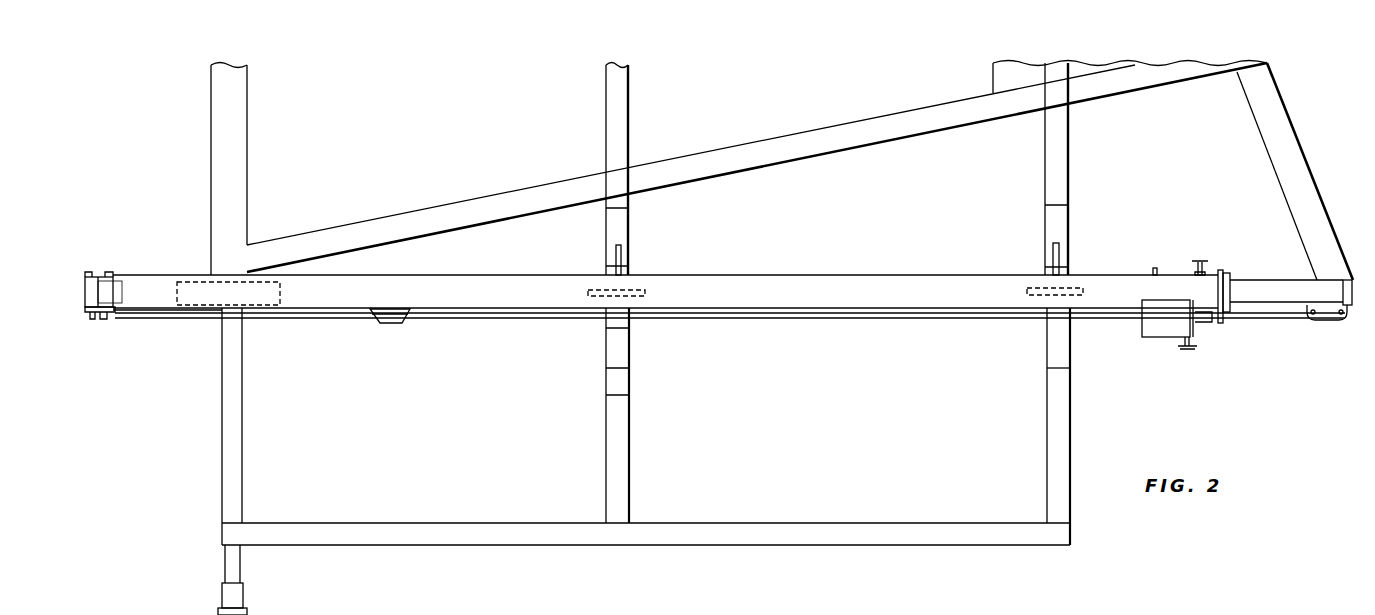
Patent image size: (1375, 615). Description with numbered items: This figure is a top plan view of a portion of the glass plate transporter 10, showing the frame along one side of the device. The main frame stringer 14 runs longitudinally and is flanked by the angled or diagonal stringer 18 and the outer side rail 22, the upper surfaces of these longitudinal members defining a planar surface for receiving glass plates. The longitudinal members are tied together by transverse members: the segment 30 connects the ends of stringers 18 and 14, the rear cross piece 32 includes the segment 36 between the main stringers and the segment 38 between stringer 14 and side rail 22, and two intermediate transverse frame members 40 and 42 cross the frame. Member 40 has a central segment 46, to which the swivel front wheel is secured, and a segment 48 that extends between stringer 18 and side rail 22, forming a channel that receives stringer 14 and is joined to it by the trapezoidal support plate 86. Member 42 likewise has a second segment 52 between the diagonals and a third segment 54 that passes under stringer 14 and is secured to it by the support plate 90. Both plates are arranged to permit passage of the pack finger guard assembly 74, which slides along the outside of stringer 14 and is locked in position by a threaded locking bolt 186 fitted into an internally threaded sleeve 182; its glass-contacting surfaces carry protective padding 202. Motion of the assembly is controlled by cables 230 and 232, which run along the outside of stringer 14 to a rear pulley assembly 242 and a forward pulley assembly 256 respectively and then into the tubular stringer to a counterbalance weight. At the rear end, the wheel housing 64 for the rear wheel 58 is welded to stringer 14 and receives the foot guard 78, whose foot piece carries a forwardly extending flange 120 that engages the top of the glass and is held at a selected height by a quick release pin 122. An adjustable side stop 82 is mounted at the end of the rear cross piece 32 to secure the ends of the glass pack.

The glass plate transporter 10 is at (1322, 162).
The second main frame stringer element 14 is at (806, 290).
The angled stringer element 18 is at (425, 210).
The side rail 22 is at (728, 546).
The transverse segment 30 is at (1272, 156).
The rear cross piece 32 is at (208, 133).
The rear cross piece segment 36 is at (248, 152).
The rear cross piece segment 38 is at (243, 436).
The intermediate transverse frame member 40 is at (1040, 164).
The intermediate transverse frame member 42 is at (601, 98).
The central segment of transverse frame member 40 46 is at (1070, 188).
The transverse segment 48 is at (1062, 432).
The second segment of transverse frame member 42 52 is at (630, 116).
The third segment of transverse frame member 42 54 is at (631, 430).
The rear wheel 58 is at (274, 310).
The wheel housing 64 is at (178, 322).
The pack finger guard assembly 74 is at (1164, 345).
The foot guard 78 is at (108, 266).
The adjustable side stop 82 is at (252, 592).
The trapezoidal support plate 86 is at (1040, 297).
The support plate 90 is at (594, 297).
The forwardly extending flange 120 is at (113, 290).
The quick release pin 122 is at (105, 320).
The internally threaded sleeve 182 is at (1196, 268).
The threaded locking bolt 186 is at (1201, 259).
The protective padding 202 is at (1150, 326).
The cable 230 is at (778, 320).
The cable 232 is at (1285, 312).
The pulley assembly 242 is at (397, 333).
The forward pulley assembly 256 is at (1328, 328).